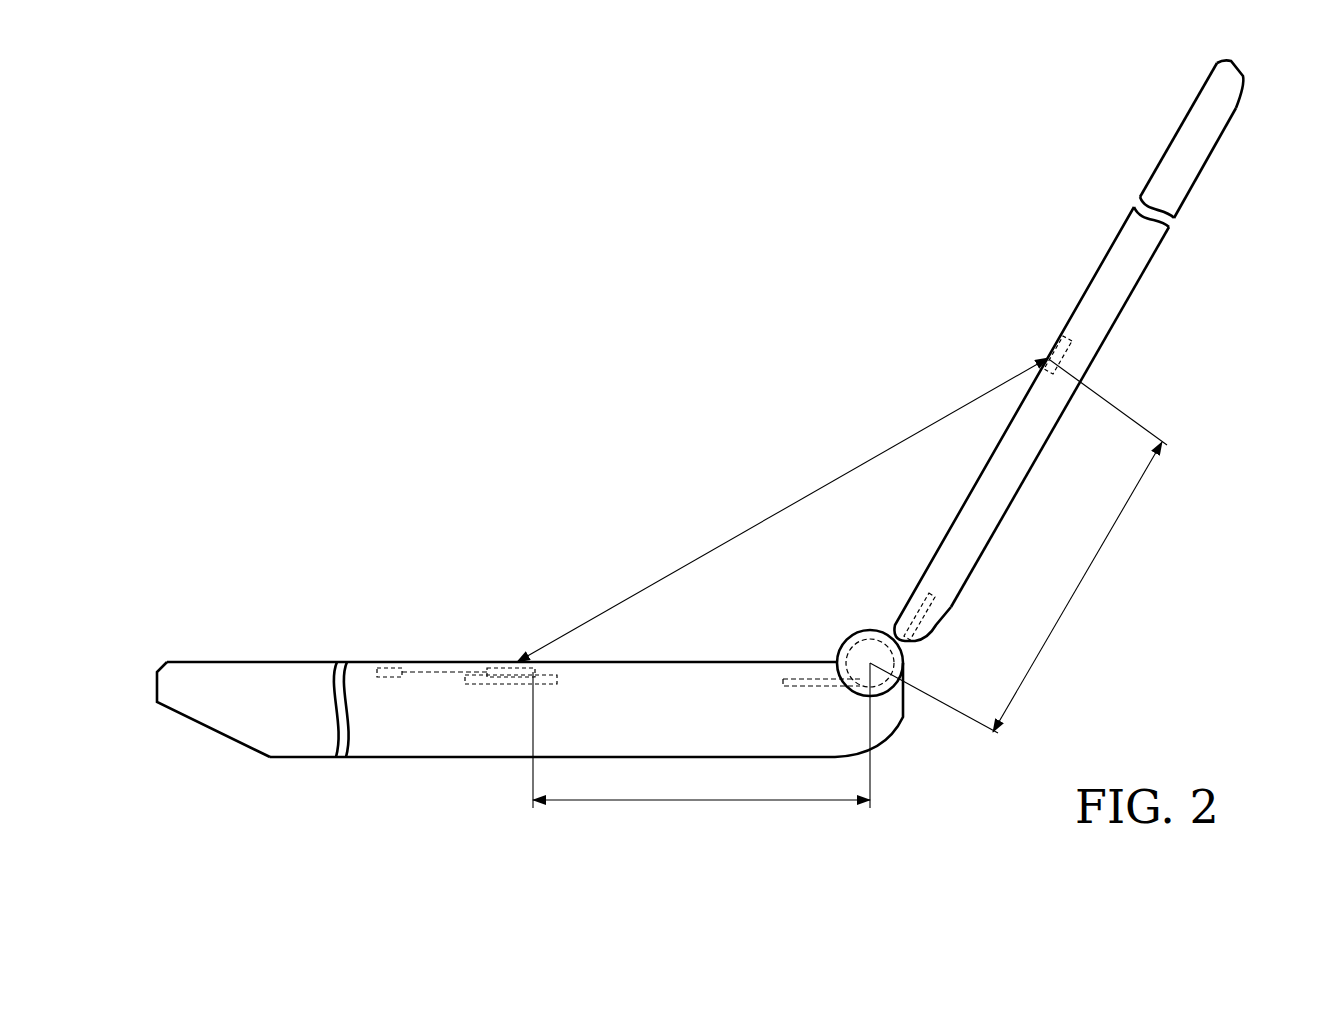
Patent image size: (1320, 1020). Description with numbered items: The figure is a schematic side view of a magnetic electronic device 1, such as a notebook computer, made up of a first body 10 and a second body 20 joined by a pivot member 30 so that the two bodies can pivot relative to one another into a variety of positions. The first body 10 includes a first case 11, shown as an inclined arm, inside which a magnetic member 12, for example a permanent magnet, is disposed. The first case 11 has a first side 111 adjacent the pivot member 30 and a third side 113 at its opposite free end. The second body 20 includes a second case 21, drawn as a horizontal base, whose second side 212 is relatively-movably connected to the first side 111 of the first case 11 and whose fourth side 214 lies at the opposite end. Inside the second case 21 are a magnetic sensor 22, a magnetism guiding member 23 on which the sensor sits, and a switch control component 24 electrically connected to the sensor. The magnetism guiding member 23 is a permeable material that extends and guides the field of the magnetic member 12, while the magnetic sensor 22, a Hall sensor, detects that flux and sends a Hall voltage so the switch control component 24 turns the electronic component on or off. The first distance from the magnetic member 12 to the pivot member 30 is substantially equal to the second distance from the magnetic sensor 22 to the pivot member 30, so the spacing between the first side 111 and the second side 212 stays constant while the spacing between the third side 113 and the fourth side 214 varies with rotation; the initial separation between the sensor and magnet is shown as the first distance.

The magnetic electronic device 1 is at (141, 130).
The first body 10 is at (1190, 363).
The first case 11 is at (1135, 290).
The magnetic member 12 is at (1064, 362).
The third side 113 is at (1230, 62).
The first side 111 is at (893, 628).
The pivot member 30 is at (857, 634).
The second body 20 is at (462, 772).
The second case 21 is at (382, 758).
The second side 212 is at (900, 645).
The fourth side 214 is at (157, 687).
The magnetic sensor 22 is at (507, 668).
The magnetism guiding member 23 is at (468, 674).
The switch control component 24 is at (390, 666).